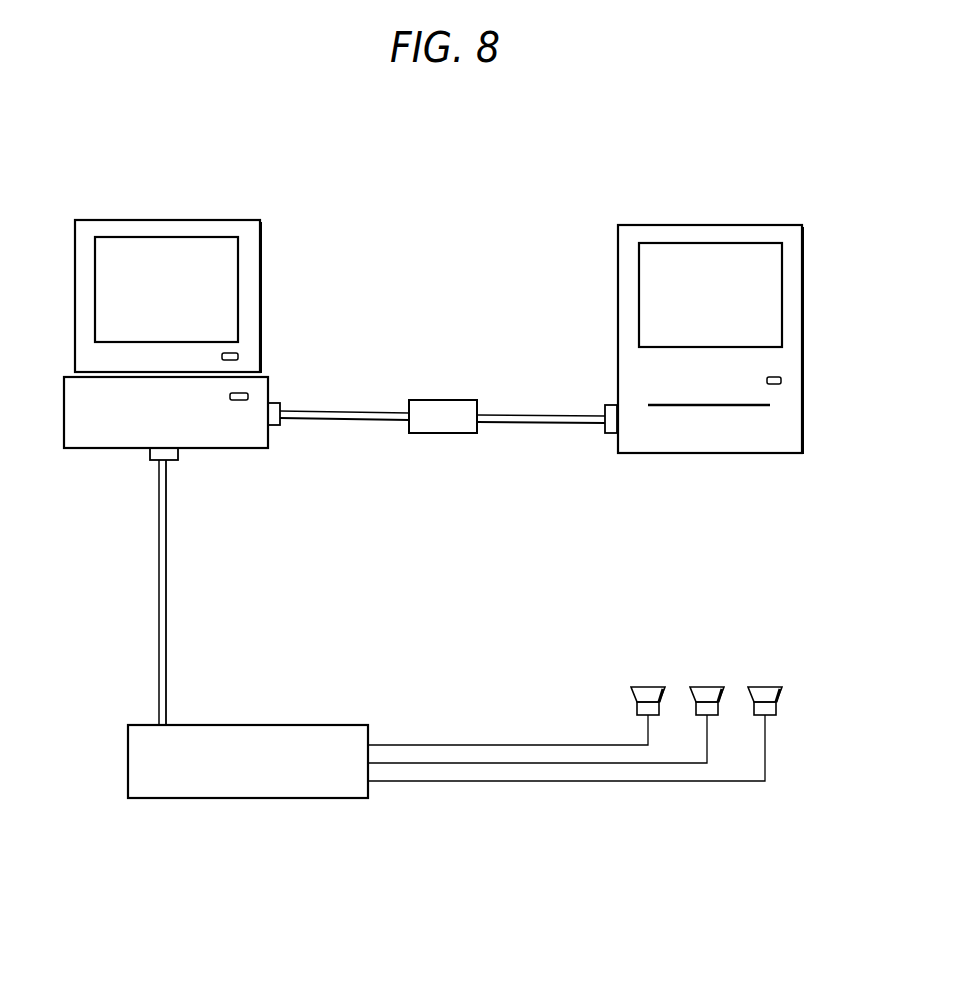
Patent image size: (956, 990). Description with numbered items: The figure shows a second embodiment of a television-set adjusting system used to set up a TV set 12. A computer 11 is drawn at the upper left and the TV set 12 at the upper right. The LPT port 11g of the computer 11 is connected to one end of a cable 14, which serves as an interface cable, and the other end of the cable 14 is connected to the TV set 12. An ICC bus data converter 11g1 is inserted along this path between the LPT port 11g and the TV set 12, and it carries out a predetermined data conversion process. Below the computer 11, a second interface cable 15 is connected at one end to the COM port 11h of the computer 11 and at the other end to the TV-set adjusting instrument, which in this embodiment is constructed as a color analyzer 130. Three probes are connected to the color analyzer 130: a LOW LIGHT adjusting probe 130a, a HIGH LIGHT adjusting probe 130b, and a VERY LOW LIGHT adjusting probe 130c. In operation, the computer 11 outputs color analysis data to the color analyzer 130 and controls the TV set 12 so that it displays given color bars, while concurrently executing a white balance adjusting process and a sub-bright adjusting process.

The computer 11 is at (171, 204).
The LPT port 11g is at (277, 402).
The ICC bus data converter 11g1 is at (445, 399).
The COM port 11h is at (150, 451).
The TV set 12 is at (715, 205).
The cable 14 is at (346, 411).
The cable 15 is at (158, 592).
The color analyzer 130 is at (128, 762).
The LOW LIGHT adjusting probe 130a is at (668, 668).
The HIGH LIGHT adjusting probe 130b is at (709, 686).
The VERY LOW LIGHT adjusting probe 130c is at (767, 686).